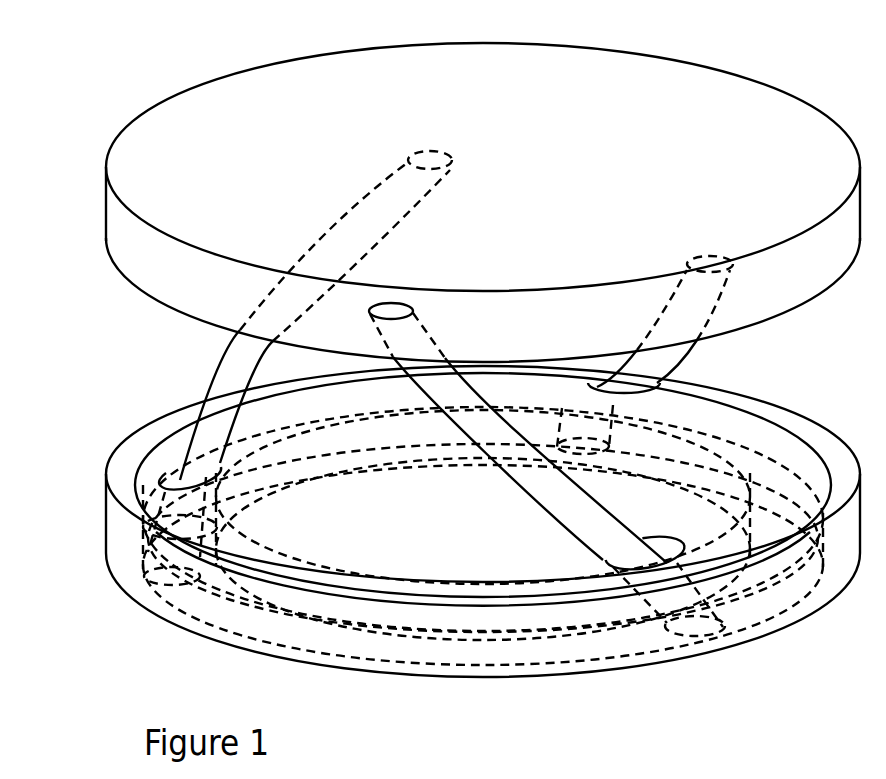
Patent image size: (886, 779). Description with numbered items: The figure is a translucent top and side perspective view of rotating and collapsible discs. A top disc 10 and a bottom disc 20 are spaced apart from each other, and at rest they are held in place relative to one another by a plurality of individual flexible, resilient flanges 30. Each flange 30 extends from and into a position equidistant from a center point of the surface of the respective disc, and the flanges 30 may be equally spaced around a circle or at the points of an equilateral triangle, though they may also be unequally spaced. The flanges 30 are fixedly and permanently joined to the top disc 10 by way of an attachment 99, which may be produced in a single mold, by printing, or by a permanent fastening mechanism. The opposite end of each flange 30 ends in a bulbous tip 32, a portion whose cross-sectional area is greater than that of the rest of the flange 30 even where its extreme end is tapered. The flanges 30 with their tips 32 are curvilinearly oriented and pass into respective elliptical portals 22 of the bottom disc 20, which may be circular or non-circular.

The top disc 10 is at (118, 240).
The bottom disc 20 is at (120, 578).
The elliptical portals 22 is at (160, 487).
The flanges 30 is at (503, 448).
The bulbous tip 32 is at (710, 620).
The attachment 99 is at (380, 304).